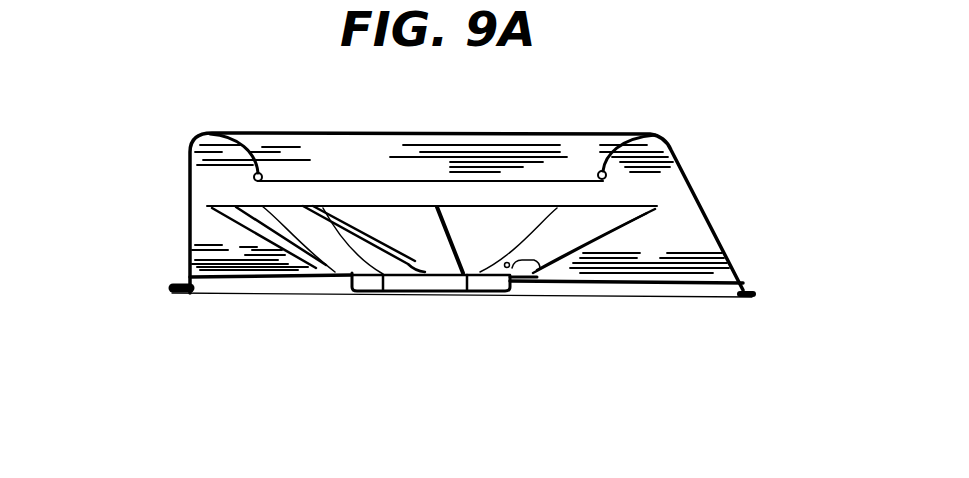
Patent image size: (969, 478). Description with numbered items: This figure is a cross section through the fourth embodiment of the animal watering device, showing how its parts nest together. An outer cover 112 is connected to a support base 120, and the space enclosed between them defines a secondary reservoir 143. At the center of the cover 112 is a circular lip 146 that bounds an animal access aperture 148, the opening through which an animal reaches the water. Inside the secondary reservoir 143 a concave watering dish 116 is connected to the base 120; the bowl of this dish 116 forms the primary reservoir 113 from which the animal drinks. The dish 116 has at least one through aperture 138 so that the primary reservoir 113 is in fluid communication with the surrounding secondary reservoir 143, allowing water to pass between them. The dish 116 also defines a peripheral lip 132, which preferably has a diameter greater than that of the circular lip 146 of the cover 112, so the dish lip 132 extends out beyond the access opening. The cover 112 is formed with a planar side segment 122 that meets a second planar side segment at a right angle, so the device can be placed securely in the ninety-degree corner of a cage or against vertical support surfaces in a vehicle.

The outer cover 112 is at (672, 152).
The primary reservoir 113 is at (427, 243).
The concave watering dish 116 is at (265, 260).
The support base 120 is at (745, 298).
The planar side segment 122 is at (195, 234).
The peripheral lip 132 is at (208, 207).
The through aperture 138 is at (538, 266).
The secondary reservoir 143 is at (698, 247).
The circular lip 146 is at (265, 171).
The animal access aperture 148 is at (557, 158).